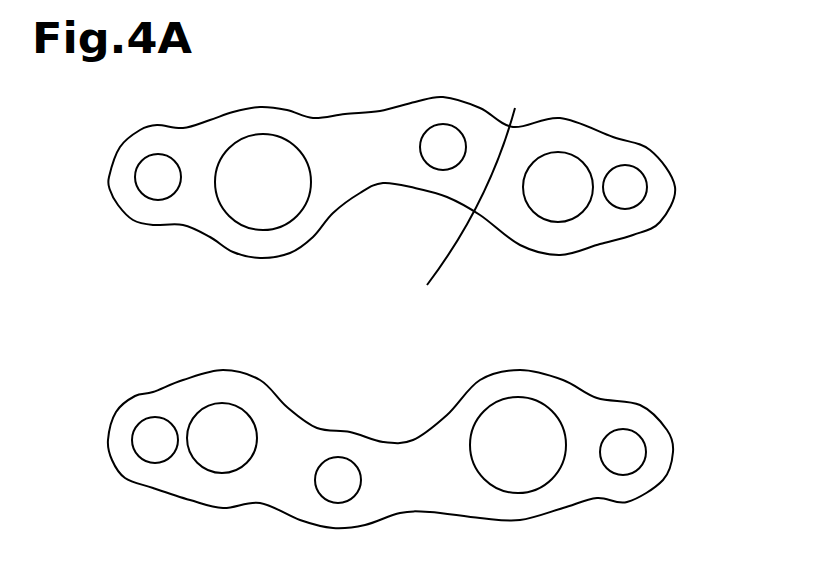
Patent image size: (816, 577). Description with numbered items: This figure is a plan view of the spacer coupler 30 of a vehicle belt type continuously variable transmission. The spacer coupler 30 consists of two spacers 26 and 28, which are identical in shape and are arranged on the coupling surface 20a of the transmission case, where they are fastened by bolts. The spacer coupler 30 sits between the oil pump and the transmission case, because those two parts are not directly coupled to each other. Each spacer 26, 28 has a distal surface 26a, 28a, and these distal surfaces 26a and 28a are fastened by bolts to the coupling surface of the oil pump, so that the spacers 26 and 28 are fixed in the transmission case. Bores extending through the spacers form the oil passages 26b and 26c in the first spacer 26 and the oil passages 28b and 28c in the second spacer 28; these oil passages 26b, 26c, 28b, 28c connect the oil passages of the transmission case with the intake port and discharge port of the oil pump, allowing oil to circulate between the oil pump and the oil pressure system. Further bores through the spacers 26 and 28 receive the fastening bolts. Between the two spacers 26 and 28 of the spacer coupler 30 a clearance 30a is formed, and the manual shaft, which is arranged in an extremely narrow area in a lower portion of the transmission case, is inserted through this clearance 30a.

The coupling surface 20a is at (625, 277).
The spacer coupler 30 is at (128, 213).
The spacer 26 is at (381, 188).
The spacer 28 is at (380, 433).
The distal surface 26a is at (362, 132).
The oil passage 26b is at (277, 212).
The oil passage 26c is at (553, 212).
The distal surface 28a is at (282, 480).
The oil passage 28b is at (497, 425).
The oil passage 28c is at (230, 422).
The clearance 30a is at (484, 185).